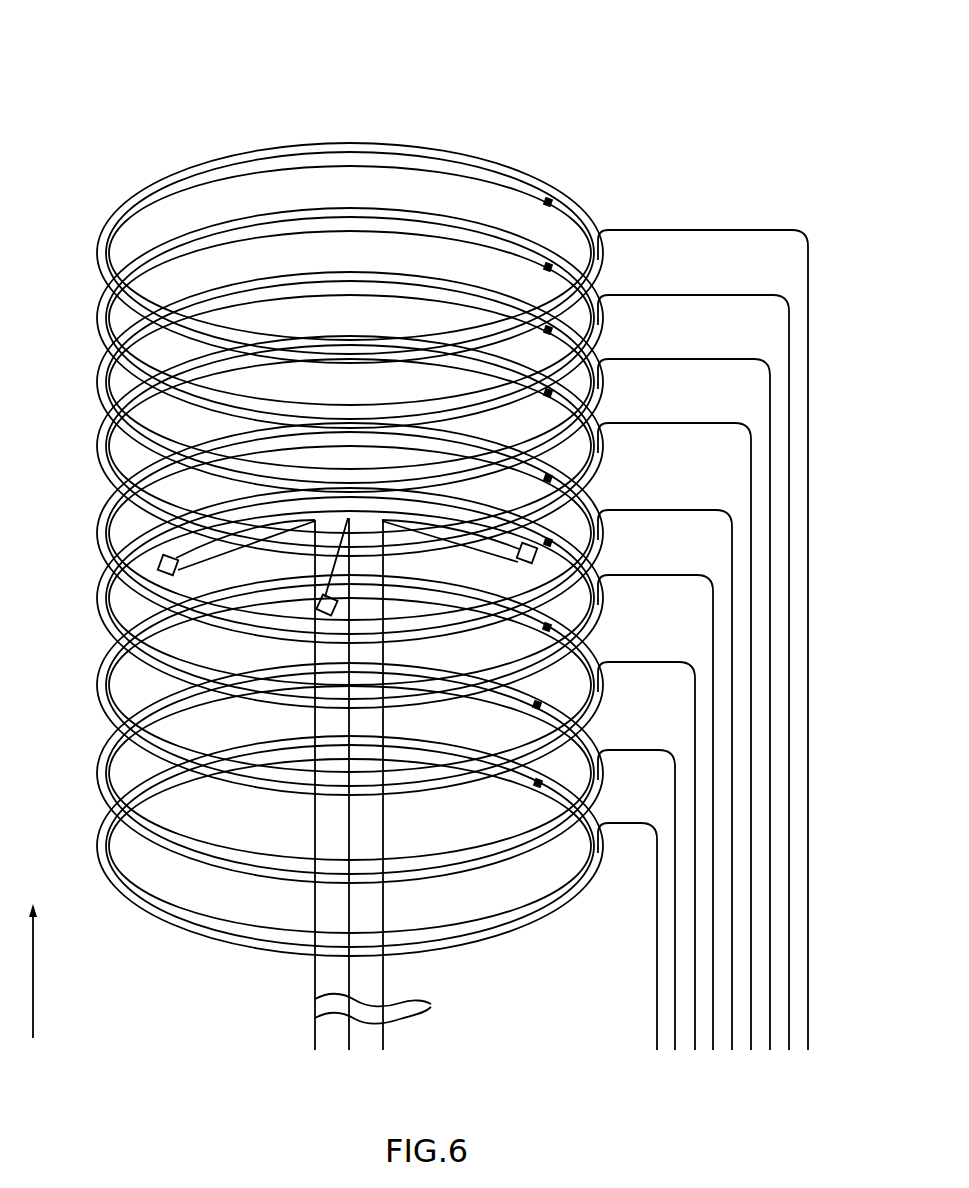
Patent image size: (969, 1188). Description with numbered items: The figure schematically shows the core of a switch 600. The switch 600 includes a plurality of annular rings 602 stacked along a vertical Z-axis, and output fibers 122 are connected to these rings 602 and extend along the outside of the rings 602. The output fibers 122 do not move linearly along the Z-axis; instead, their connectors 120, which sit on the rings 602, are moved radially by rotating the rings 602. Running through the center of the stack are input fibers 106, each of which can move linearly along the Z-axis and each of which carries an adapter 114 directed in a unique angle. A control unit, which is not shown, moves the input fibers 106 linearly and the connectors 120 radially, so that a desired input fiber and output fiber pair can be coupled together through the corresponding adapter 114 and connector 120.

The switch 600 is at (162, 62).
The annular rings 602 is at (500, 166).
The connectors 120 is at (560, 205).
The output fibers 122 is at (700, 231).
The adapter 114 is at (560, 562).
The input fibers 106 is at (392, 784).